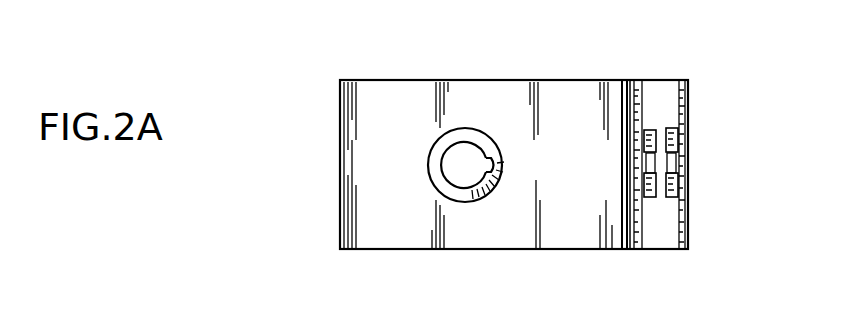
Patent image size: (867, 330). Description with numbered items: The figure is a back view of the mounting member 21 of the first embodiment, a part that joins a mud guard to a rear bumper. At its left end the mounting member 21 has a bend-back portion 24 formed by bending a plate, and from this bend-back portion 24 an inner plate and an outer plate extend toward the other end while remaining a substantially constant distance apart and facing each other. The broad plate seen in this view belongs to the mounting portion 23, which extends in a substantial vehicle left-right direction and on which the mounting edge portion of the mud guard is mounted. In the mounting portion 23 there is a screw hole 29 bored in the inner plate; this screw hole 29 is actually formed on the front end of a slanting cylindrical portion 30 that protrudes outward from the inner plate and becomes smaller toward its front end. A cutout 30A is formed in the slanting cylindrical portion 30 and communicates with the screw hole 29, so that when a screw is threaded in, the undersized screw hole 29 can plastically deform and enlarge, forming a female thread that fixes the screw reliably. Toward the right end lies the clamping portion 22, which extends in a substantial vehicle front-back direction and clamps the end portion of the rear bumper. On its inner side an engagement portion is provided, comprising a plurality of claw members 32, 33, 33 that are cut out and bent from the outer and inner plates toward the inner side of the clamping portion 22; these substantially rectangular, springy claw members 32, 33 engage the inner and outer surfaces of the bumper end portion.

The mounting member 21 is at (326, 115).
The clamping portion 22 is at (692, 137).
The mounting portion 23 is at (409, 237).
The bend-back portion 24 is at (340, 165).
The screw hole 29 is at (445, 148).
The slanting cylindrical portion 30 is at (437, 160).
The cutout 30A is at (493, 152).
The claw member 32 is at (676, 166).
The claw member 33 is at (672, 128).